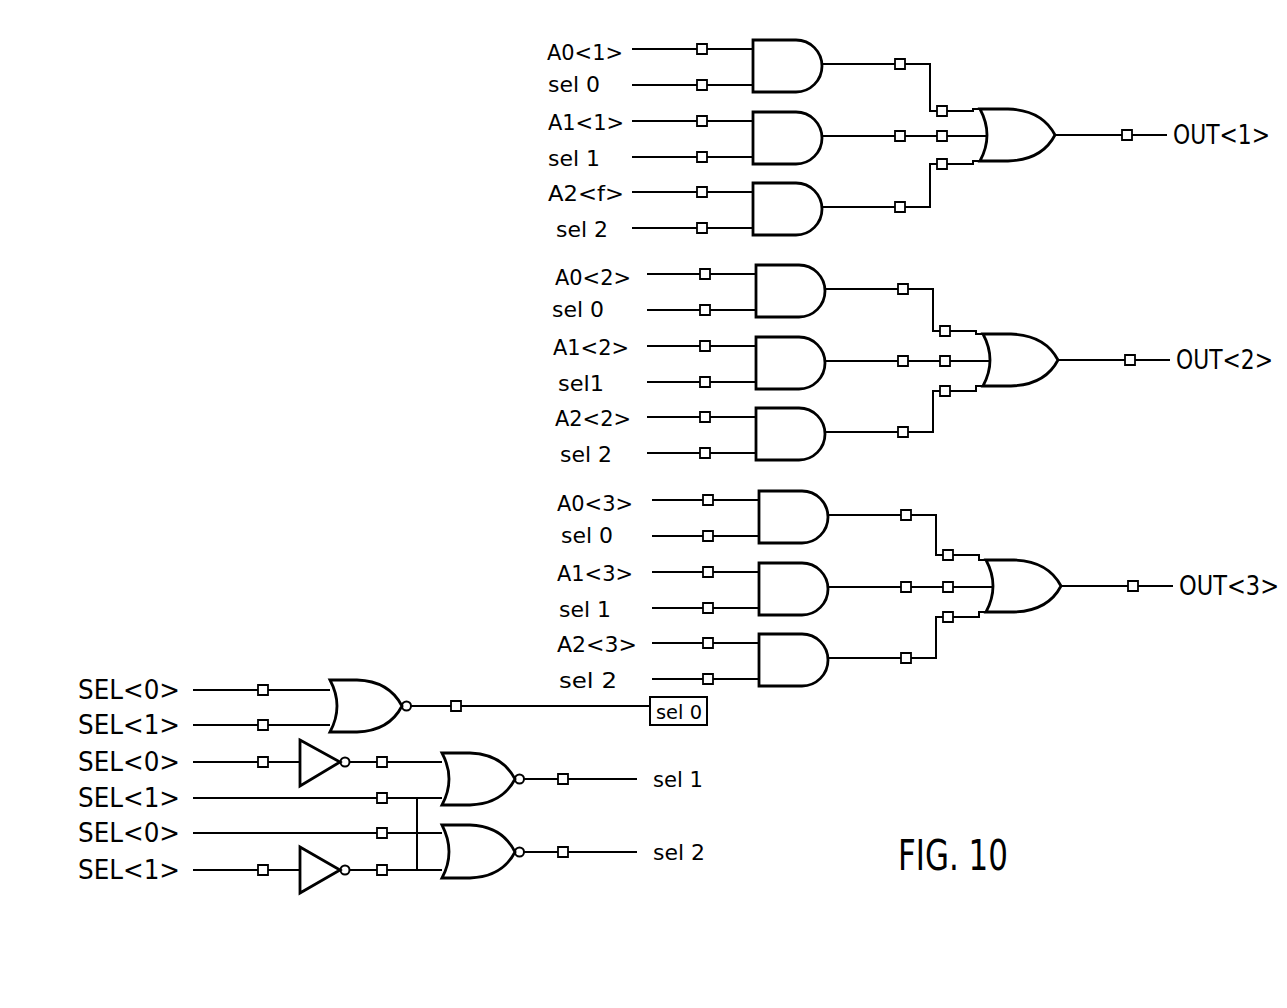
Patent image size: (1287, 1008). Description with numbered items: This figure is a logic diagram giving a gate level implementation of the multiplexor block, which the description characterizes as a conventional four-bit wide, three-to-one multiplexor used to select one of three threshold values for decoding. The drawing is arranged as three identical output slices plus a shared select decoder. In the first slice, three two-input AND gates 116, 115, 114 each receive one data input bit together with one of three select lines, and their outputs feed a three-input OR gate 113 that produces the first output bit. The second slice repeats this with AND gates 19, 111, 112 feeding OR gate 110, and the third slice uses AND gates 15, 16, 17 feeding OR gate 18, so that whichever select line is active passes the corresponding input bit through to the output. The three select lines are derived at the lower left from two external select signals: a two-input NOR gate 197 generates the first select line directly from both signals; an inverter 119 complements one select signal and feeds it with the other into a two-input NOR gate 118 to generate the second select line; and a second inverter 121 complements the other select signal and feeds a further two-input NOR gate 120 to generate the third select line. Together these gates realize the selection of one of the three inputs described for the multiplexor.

The AND gate 116 is at (800, 56).
The AND gate 115 is at (801, 129).
The AND gate 114 is at (801, 200).
The OR gate 113 is at (1015, 130).
The AND gate 19 is at (803, 281).
The AND gate 111 is at (804, 354).
The AND gate 112 is at (804, 425).
The OR gate 110 is at (1018, 355).
The AND gate 15 is at (806, 507).
The AND gate 16 is at (807, 580).
The AND gate 17 is at (807, 652).
The OR gate 18 is at (1021, 581).
The NOR gate 197 is at (362, 692).
The inverter 119 is at (337, 765).
The NOR gate 118 is at (483, 777).
The inverter 121 is at (336, 874).
The NOR gate 120 is at (491, 862).